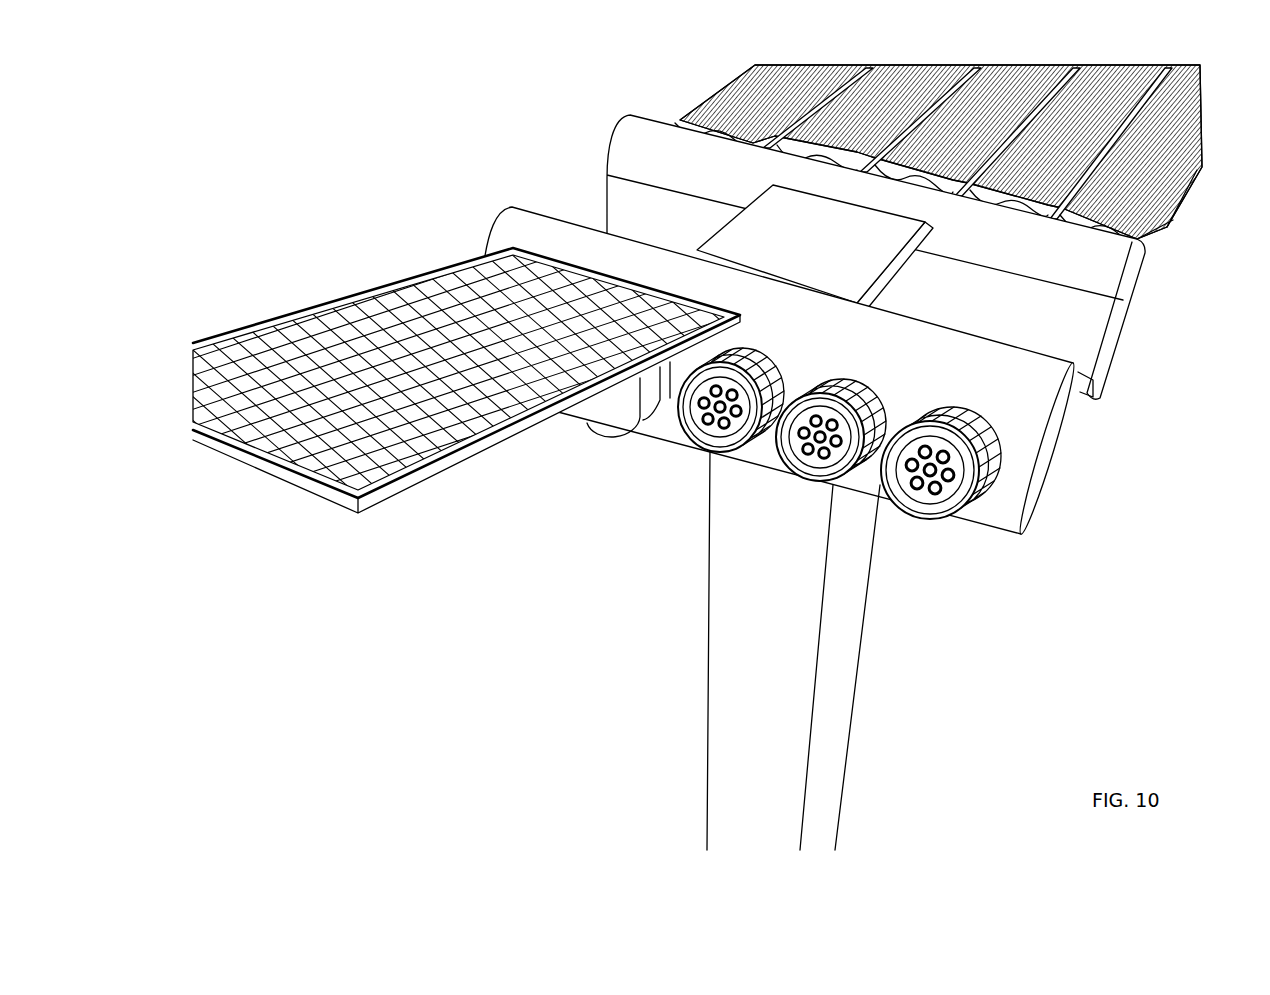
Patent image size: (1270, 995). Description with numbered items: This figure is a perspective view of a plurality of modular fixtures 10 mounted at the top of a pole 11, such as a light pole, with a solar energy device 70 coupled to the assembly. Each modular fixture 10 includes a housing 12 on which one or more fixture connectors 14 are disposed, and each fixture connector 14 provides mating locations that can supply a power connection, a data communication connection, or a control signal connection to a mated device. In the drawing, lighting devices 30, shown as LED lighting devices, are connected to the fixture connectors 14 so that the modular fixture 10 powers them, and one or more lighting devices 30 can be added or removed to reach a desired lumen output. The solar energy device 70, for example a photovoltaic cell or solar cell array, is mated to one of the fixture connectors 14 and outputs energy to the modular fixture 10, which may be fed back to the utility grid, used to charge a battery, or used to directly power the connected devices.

The modular fixture 10 is at (485, 175).
The pole 11 is at (710, 588).
The housing 12 is at (1113, 340).
The fixture connector 14 is at (708, 428).
The lighting device 30 is at (727, 90).
The solar energy device 70 is at (313, 310).